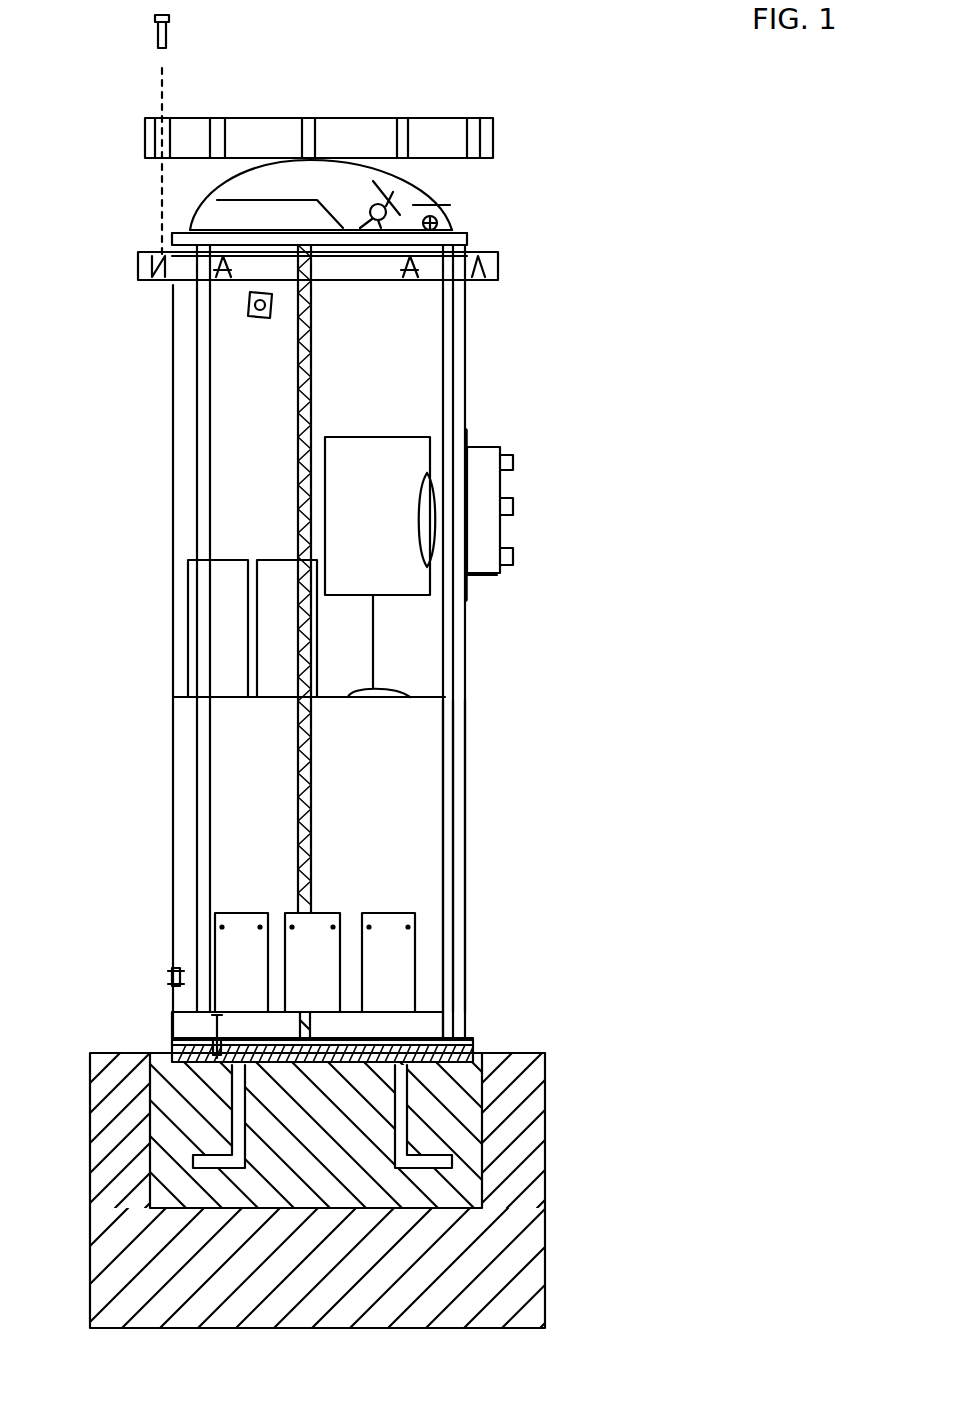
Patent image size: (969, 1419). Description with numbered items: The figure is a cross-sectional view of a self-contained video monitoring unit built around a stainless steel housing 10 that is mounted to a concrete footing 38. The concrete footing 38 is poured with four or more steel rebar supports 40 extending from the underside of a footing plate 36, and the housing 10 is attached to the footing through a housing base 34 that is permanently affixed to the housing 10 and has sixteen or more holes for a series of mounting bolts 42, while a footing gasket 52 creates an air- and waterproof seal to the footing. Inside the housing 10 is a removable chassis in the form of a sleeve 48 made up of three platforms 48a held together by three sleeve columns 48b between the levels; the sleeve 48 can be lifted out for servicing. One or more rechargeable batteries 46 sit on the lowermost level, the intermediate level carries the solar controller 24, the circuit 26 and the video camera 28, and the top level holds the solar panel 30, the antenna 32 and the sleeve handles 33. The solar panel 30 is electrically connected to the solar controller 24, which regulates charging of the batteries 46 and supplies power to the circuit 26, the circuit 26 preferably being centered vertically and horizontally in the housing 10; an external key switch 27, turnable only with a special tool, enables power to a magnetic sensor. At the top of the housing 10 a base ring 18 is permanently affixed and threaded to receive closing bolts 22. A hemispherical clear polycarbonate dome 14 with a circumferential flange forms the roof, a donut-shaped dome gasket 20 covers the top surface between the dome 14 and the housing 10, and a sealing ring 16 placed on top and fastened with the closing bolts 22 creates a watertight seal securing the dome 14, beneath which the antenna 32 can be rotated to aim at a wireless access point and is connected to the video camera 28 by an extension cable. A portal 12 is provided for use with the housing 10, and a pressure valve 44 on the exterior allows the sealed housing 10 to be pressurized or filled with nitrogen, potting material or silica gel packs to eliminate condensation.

The housing 10 is at (488, 352).
The portal 12 is at (515, 512).
The dome 14 is at (468, 236).
The sealing ring 16 is at (493, 133).
The base ring 18 is at (500, 271).
The dome gasket 20 is at (472, 242).
The closing bolts 22 is at (168, 38).
The solar controller 24 is at (187, 630).
The circuit 26 is at (253, 593).
The key switch 27 is at (248, 305).
The video camera 28 is at (407, 598).
The solar panel 30 is at (190, 226).
The antenna 32 is at (413, 202).
The sleeve handles 33 is at (457, 230).
The housing base 34 is at (477, 1040).
The footing plate 36 is at (475, 1062).
The concrete footing 38 is at (545, 1195).
The steel rebar supports 40 is at (485, 1163).
The mounting bolts 42 is at (167, 1025).
The pressure valve 44 is at (173, 978).
The batteries 46 is at (417, 938).
The sleeve 48 is at (503, 727).
The platforms 48a is at (443, 800).
The sleeve columns 48b is at (455, 843).
The footing gasket 52 is at (170, 1045).